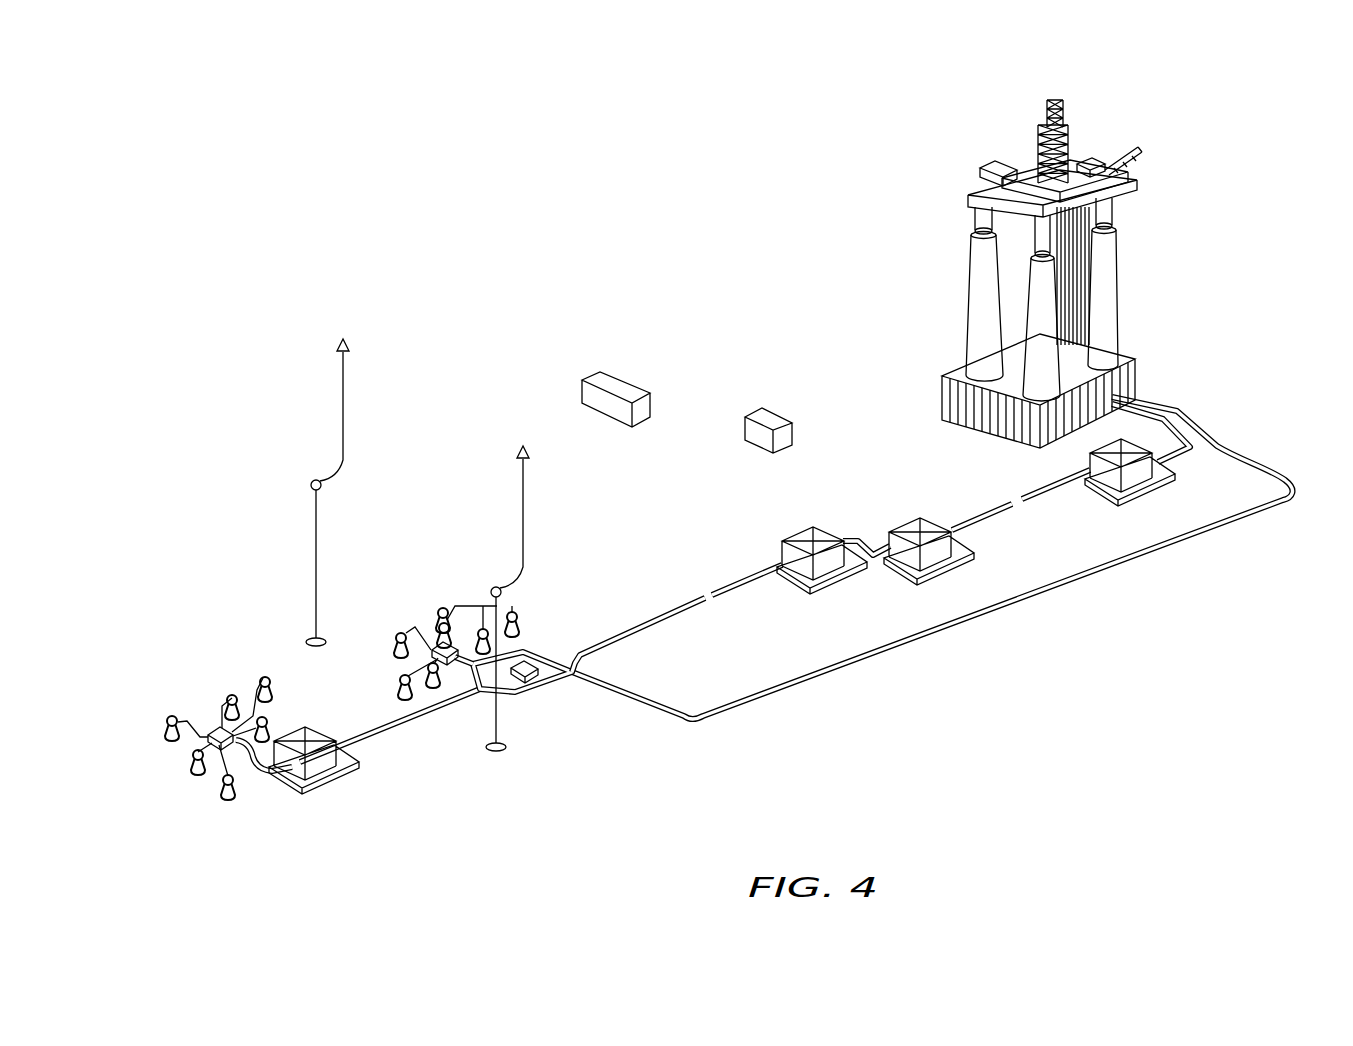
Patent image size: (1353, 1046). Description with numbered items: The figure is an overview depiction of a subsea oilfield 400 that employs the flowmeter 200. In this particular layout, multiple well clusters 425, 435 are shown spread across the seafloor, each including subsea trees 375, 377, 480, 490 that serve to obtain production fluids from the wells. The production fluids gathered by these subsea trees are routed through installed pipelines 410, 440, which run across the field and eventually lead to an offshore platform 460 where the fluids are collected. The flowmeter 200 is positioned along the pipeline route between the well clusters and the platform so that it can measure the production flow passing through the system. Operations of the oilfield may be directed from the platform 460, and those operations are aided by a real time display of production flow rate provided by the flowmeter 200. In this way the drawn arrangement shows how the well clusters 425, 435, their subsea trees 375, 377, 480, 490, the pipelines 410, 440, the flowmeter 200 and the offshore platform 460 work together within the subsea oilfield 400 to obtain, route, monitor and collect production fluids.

The subsea oilfield 400 is at (1071, 689).
The pipeline 410 is at (1203, 528).
The pipeline 440 is at (752, 576).
The offshore platform 460 is at (1185, 187).
The well cluster 425 is at (528, 609).
The well cluster 435 is at (170, 782).
The subsea tree 375 is at (400, 646).
The subsea tree 377 is at (398, 688).
The subsea tree 480 is at (270, 686).
The subsea tree 490 is at (167, 735).
The flowmeter 200 is at (530, 680).